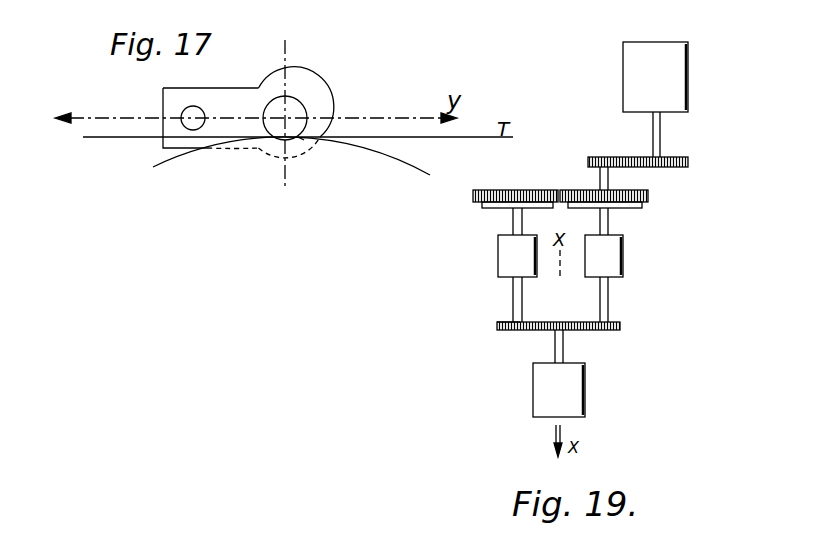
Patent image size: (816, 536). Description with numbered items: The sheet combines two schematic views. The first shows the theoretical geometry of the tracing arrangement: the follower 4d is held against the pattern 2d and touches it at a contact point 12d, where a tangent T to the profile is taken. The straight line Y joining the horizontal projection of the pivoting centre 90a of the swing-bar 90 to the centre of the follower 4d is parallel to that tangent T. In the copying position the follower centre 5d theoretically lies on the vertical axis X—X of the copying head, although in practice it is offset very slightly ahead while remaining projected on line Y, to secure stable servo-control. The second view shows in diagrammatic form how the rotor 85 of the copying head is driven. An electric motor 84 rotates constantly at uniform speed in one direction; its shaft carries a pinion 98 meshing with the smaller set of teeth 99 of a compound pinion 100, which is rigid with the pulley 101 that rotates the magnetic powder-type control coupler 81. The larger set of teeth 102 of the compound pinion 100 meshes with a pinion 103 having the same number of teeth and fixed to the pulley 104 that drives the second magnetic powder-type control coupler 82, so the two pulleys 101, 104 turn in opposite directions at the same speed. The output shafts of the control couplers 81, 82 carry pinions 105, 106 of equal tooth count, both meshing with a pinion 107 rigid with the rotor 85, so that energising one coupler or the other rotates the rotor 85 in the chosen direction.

In FIG. 17, the swing-bar 90 is at (173, 103).
In FIG. 17, the pivoting centre 90a is at (195, 108).
In FIG. 17, the follower 4d is at (307, 112).
In FIG. 17, the follower centre 5d is at (288, 116).
In FIG. 17, the pattern 2d is at (170, 158).
In FIG. 17, the contact point 12d is at (302, 140).
In FIG. 19, the electric motor 84 is at (655, 99).
In FIG. 19, the pinion 98 is at (673, 158).
In FIG. 19, the smaller set of teeth 99 is at (603, 157).
In FIG. 19, the compound pinion 100 is at (597, 180).
In FIG. 19, the pulley 101 is at (635, 208).
In FIG. 19, the larger set of teeth 102 is at (648, 194).
In FIG. 19, the pinion 103 is at (498, 191).
In FIG. 19, the pulley 104 is at (484, 207).
In FIG. 19, the second magnetic powder-type control coupler 82 is at (510, 248).
In FIG. 19, the magnetic powder-type control coupler 81 is at (616, 258).
In FIG. 19, the pinion 105 is at (621, 326).
In FIG. 19, the pinion 106 is at (497, 325).
In FIG. 19, the pinion 107 is at (548, 323).
In FIG. 19, the rotor 85 is at (572, 390).